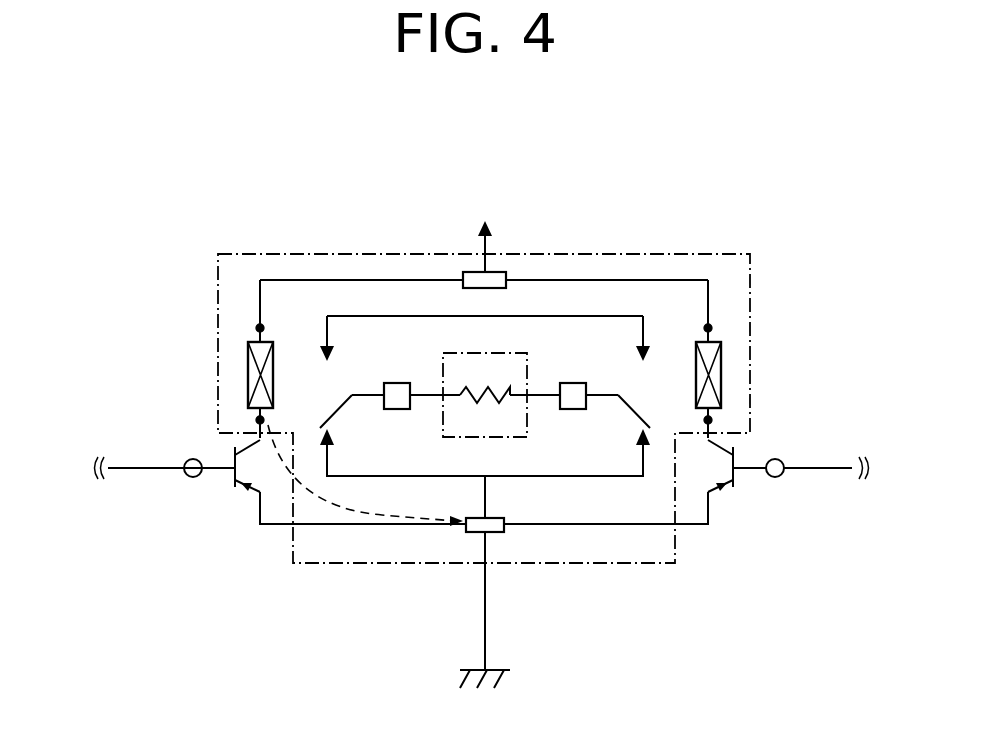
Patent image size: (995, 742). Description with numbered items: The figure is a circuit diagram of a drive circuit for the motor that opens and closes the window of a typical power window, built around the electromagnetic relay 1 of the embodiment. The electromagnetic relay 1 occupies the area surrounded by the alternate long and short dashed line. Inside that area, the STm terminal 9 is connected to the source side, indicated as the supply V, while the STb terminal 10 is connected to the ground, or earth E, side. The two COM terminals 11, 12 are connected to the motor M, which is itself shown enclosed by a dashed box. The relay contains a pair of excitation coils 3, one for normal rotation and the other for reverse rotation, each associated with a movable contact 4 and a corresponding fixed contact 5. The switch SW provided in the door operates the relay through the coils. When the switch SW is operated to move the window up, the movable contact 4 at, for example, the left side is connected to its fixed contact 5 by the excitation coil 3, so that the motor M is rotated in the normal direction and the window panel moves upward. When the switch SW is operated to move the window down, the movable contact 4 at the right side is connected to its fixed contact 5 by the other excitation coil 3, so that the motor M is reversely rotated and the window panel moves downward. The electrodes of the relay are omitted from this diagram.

The electromagnetic relay 1 is at (671, 207).
The excitation coil 3 is at (248, 378).
The movable contact 4 is at (338, 418).
The fixed contact 5 is at (325, 347).
The STm terminal 9 is at (500, 272).
The STb terminal 10 is at (491, 533).
The COM terminal 11 is at (574, 383).
The COM terminal 12 is at (397, 383).
The motor M is at (520, 352).
The power supply voltage V is at (484, 212).
The earth E is at (502, 678).
The switch SW is at (483, 466).